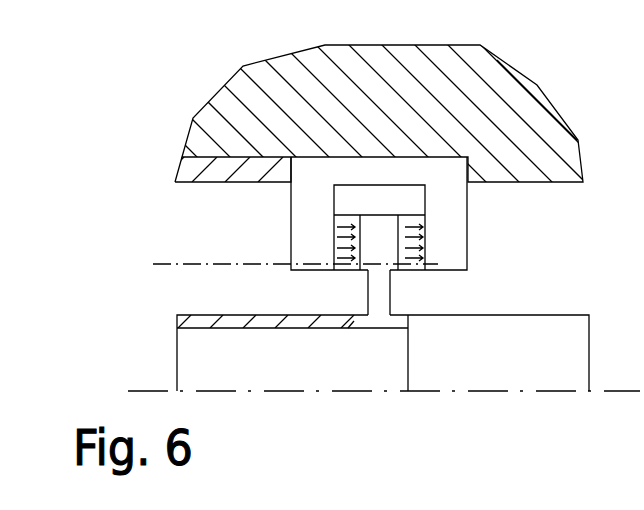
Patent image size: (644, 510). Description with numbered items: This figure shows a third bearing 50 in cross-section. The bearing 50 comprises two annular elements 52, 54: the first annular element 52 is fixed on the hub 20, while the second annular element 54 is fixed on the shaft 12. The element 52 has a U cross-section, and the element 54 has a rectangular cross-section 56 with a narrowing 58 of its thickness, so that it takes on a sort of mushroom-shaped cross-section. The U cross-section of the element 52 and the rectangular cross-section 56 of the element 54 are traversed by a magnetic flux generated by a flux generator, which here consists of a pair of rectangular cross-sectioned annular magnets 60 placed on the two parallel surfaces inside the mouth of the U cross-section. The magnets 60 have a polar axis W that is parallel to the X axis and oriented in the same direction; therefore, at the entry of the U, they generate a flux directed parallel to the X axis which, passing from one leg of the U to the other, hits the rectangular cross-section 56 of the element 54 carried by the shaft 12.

The bearing 50 is at (186, 89).
The hub 20 is at (195, 137).
The annular element 52 is at (478, 255).
The rectangular cross-section 56 is at (383, 236).
The magnets 60 is at (336, 241).
The annular element 54 is at (358, 300).
The narrowing 58 is at (391, 290).
The shaft 12 is at (188, 353).
The polar axis W is at (233, 263).
The X axis X is at (615, 388).